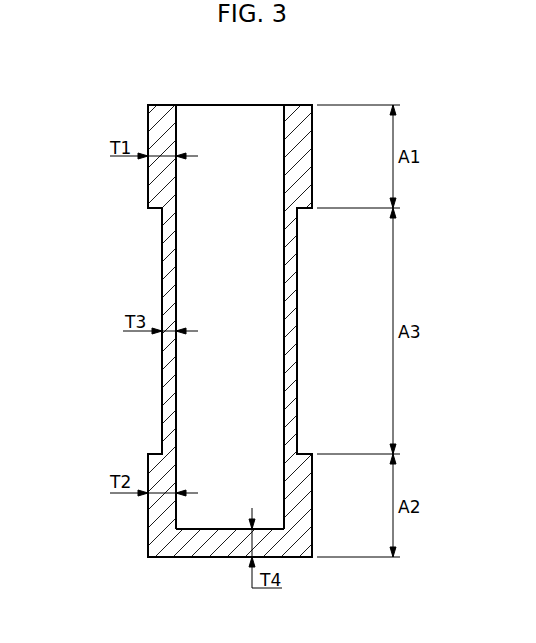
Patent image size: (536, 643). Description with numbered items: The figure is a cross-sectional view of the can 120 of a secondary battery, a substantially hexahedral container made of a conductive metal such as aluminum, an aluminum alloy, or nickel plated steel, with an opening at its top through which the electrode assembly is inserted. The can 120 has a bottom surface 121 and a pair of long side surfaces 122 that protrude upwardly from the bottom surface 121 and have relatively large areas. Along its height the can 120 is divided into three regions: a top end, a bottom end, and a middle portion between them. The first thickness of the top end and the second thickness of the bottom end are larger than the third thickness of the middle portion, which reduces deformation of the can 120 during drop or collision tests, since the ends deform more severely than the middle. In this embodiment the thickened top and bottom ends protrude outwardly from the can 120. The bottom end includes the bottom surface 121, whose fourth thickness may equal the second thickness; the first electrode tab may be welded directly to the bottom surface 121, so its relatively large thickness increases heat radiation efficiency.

The can 120 is at (112, 85).
The bottom surface 121 is at (190, 548).
The long side surfaces 122 is at (162, 265).